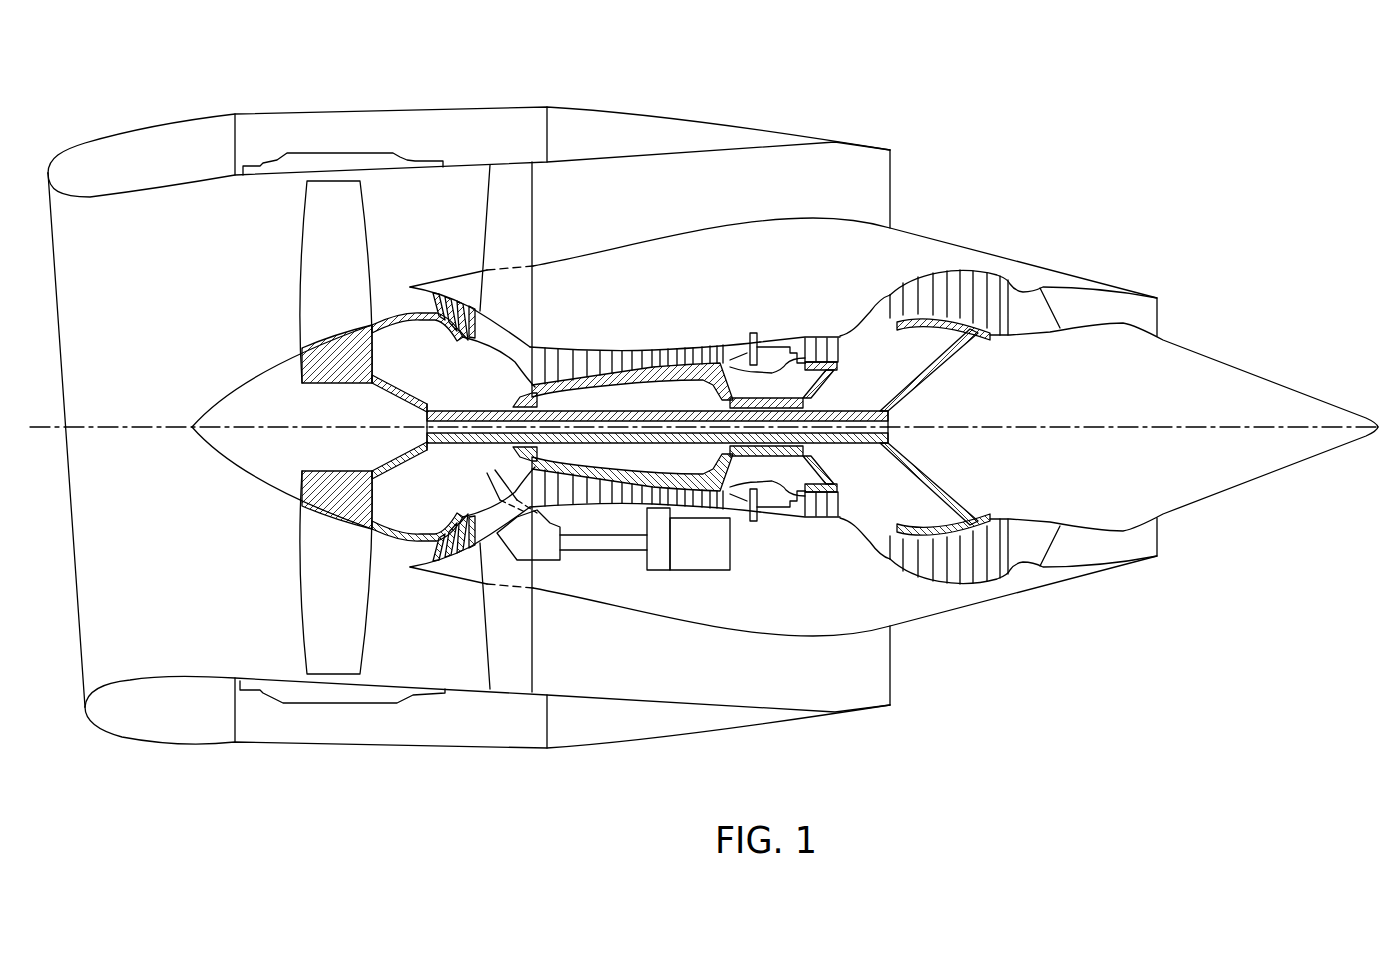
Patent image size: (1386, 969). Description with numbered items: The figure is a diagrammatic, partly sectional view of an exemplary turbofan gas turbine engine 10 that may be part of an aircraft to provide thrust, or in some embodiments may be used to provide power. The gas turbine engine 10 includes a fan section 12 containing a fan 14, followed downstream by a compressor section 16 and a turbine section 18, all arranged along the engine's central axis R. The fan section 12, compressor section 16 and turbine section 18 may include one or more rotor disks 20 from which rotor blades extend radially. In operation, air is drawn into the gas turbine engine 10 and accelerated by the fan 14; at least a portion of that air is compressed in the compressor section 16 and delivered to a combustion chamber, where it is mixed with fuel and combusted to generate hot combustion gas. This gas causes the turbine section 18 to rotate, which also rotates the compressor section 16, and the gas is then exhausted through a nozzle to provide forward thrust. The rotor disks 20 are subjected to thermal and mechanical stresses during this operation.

The turbofan gas turbine engine 10 is at (890, 130).
The fan section 12 is at (290, 270).
The fan 14 is at (318, 298).
The compressor section 16 is at (620, 343).
The turbine section 18 is at (823, 336).
The rotor disks 20 is at (840, 518).
The engine central longitudinal axis R is at (1123, 427).